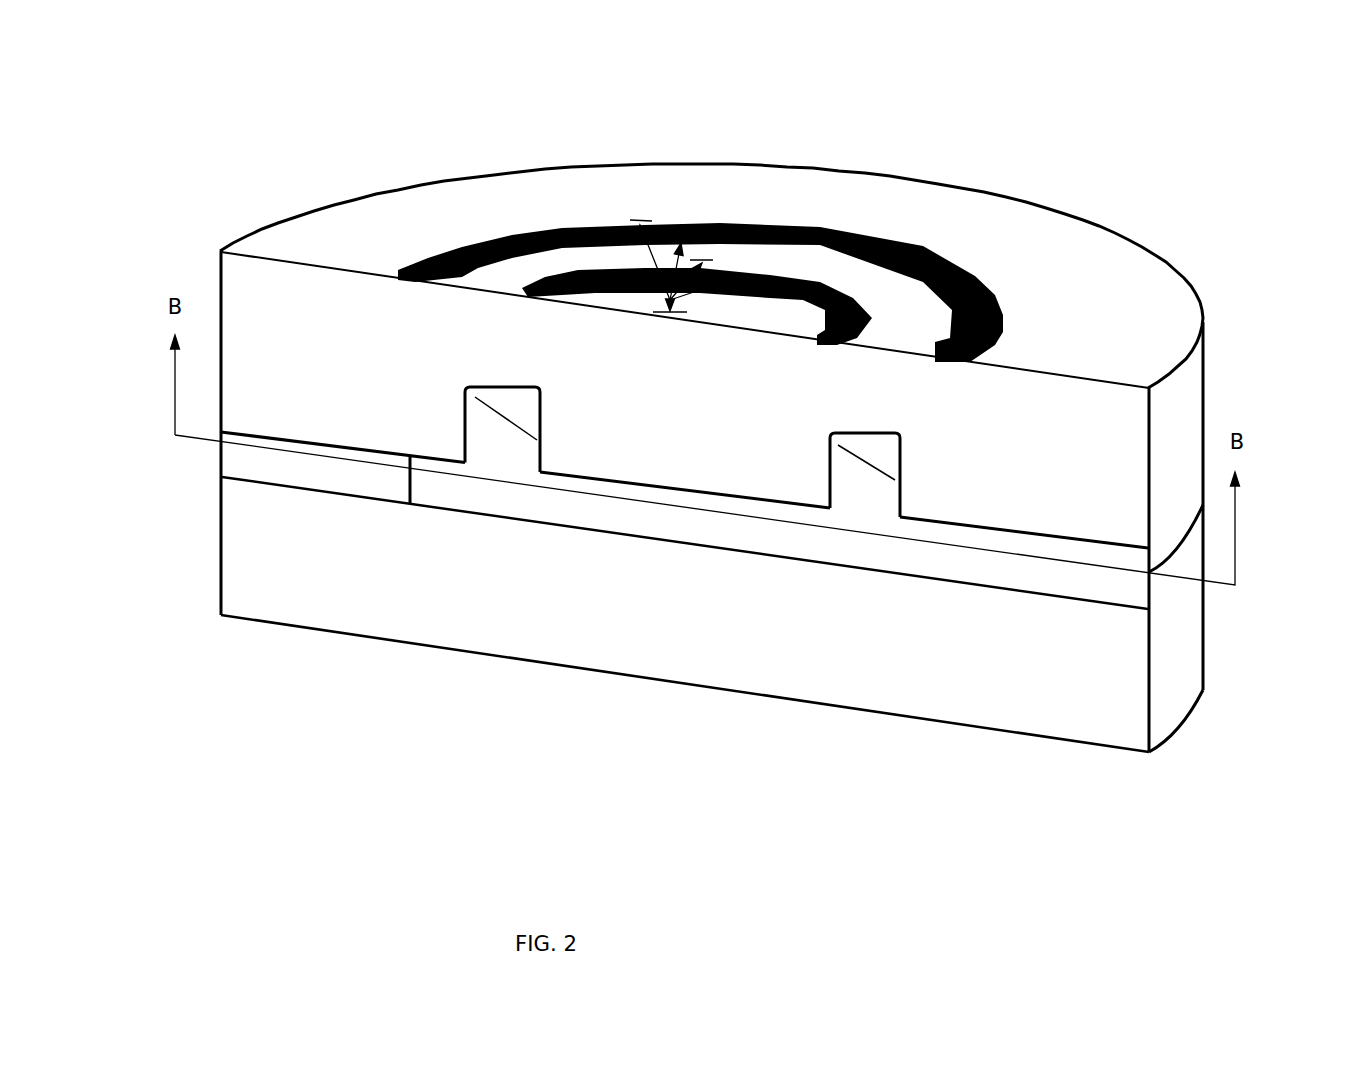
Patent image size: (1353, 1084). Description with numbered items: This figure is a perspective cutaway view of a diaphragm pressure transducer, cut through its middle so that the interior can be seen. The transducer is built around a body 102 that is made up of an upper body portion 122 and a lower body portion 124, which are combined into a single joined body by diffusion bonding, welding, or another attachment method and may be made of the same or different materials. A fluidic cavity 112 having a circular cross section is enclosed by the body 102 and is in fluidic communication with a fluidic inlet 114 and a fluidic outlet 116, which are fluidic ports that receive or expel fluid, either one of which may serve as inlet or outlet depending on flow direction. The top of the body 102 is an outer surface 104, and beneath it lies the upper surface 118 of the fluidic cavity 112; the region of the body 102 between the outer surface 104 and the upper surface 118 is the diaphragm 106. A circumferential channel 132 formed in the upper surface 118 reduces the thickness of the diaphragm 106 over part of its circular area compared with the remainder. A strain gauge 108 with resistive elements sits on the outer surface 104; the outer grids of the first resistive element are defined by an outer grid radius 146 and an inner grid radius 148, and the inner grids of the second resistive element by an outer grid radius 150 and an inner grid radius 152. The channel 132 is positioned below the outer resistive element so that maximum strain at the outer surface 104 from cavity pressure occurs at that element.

The body 102 is at (1077, 262).
The outer surface 104 is at (757, 298).
The diaphragm 106 is at (665, 292).
The strain gauge 108 is at (697, 178).
The fluidic cavity 112 is at (639, 518).
The fluidic inlet 114 is at (240, 467).
The fluidic outlet 116 is at (1133, 598).
The upper surface 118 is at (606, 472).
The upper body portion 122 is at (1174, 412).
The lower body portion 124 is at (1060, 718).
The circumferential channel 132 is at (487, 430).
The outer grid radius 146 is at (631, 368).
The inner grid radius 148 is at (670, 300).
The outer grid radius 150 is at (690, 258).
The inner grid radius 152 is at (697, 292).